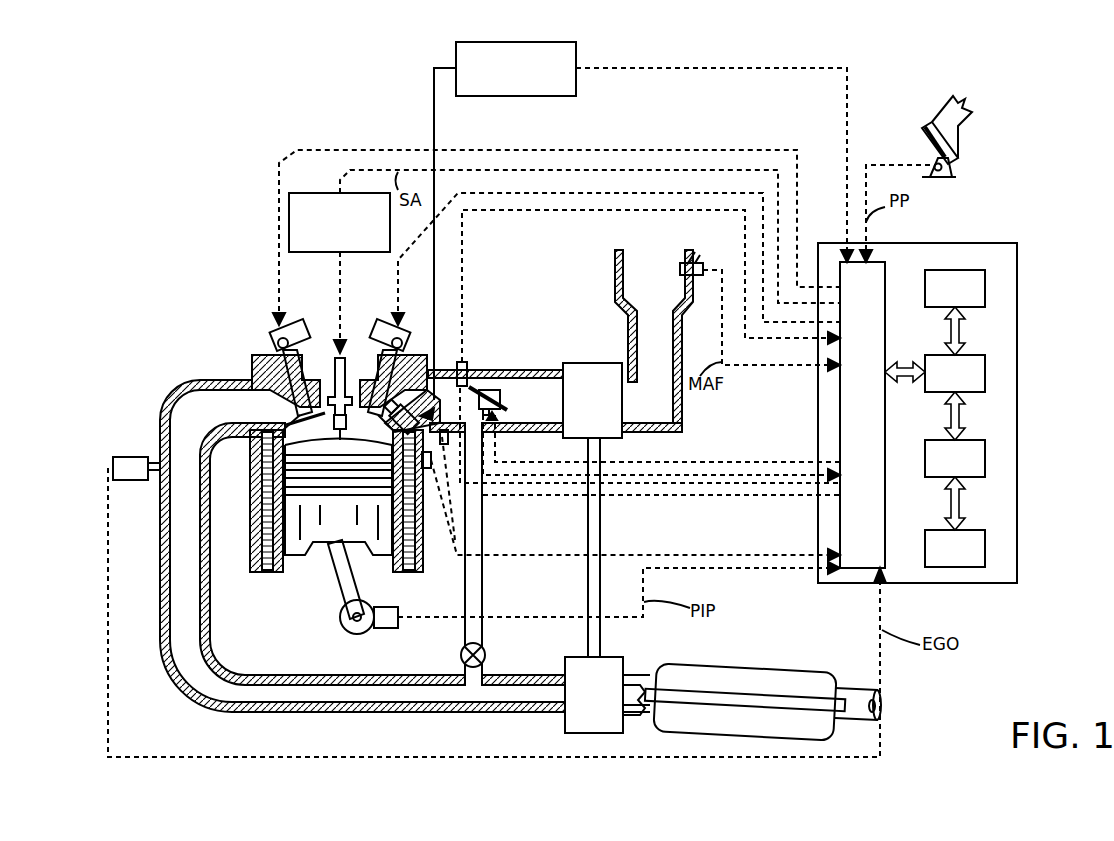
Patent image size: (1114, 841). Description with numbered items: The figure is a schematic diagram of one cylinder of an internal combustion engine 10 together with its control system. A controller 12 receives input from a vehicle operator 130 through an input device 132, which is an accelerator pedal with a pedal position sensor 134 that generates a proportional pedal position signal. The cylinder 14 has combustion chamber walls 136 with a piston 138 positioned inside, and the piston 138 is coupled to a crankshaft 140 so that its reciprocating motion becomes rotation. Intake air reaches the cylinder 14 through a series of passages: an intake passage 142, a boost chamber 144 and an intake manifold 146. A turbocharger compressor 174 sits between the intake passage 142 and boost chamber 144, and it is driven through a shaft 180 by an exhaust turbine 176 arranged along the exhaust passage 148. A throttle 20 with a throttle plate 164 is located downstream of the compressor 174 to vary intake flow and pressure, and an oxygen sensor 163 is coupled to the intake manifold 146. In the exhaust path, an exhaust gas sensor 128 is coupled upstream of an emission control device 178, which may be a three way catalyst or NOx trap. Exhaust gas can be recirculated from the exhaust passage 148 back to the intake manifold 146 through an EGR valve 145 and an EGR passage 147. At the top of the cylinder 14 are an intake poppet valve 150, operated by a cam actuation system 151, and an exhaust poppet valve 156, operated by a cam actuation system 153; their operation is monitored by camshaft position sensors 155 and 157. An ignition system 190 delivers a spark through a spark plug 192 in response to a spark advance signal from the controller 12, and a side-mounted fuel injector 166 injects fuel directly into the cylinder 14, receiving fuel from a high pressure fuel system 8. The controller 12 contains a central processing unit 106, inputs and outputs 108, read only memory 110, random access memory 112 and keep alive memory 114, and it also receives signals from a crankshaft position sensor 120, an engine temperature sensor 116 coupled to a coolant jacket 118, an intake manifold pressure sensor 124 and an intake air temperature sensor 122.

The high pressure fuel system 8 is at (643, 221).
The internal combustion engine 10 is at (178, 177).
The controller 12 is at (953, 402).
The cylinder 14 is at (262, 460).
The throttle 20 is at (488, 388).
The central processing unit 106 is at (985, 370).
The inputs and outputs 108 is at (888, 268).
The read only memory 110 is at (985, 285).
The random access memory 112 is at (985, 456).
The keep alive memory 114 is at (985, 546).
The engine temperature sensor 116 is at (422, 490).
The coolant jacket 118 is at (430, 548).
The crankshaft position sensor 120 is at (390, 630).
The intake air temperature sensor 122 is at (697, 262).
The intake manifold pressure sensor 124 is at (452, 362).
The exhaust gas sensor 128 is at (113, 460).
The vehicle operator 130 is at (965, 113).
The input device 132 is at (925, 140).
The pedal position sensor 134 is at (955, 166).
The combustion chamber walls 136 is at (283, 572).
The piston 138 is at (323, 545).
The crankshaft 140 is at (348, 632).
The intake passage 142 is at (654, 336).
The boost chamber 144 is at (555, 401).
The EGR valve 145 is at (462, 650).
The intake manifold 146 is at (464, 405).
The EGR passage 147 is at (483, 586).
The exhaust passage 148 is at (362, 546).
The intake poppet valve 150 is at (357, 378).
The cam actuation system 151 is at (391, 345).
The cam actuation system 153 is at (287, 345).
The camshaft position sensor 155 is at (405, 335).
The exhaust poppet valve 156 is at (296, 410).
The camshaft position sensor 157 is at (272, 338).
The oxygen sensor 163 is at (466, 362).
The throttle plate 164 is at (472, 388).
The fuel injector 166 is at (408, 415).
The compressor 174 is at (580, 363).
The exhaust turbine 176 is at (565, 728).
The emission control device 178 is at (800, 670).
The shaft 180 is at (600, 633).
The ignition system 190 is at (305, 193).
The spark plug 192 is at (333, 372).